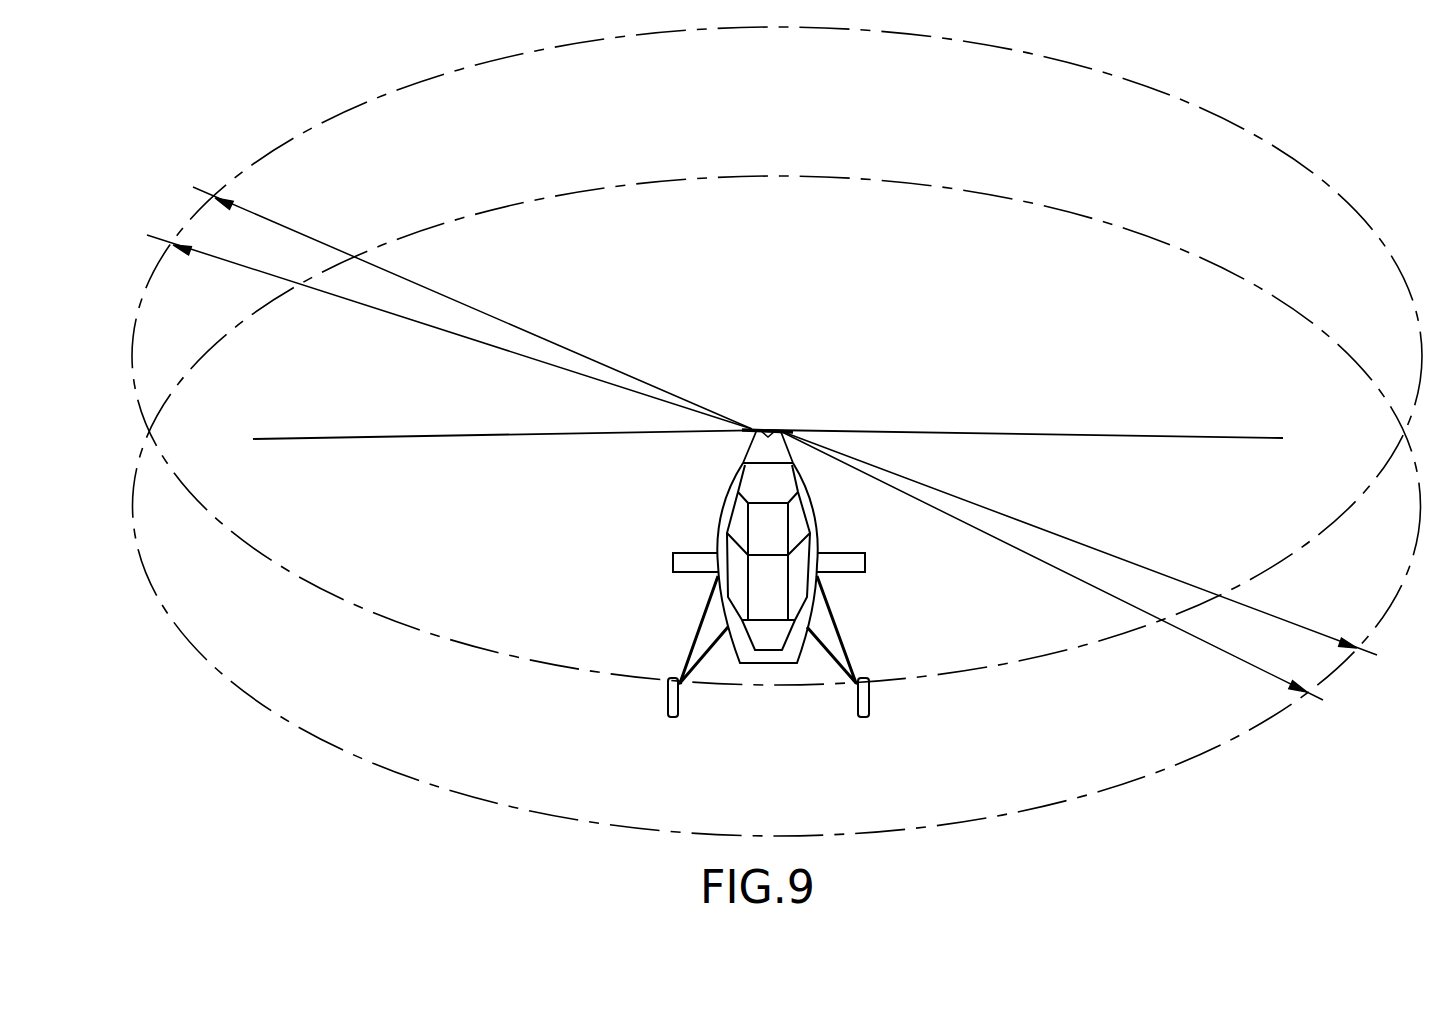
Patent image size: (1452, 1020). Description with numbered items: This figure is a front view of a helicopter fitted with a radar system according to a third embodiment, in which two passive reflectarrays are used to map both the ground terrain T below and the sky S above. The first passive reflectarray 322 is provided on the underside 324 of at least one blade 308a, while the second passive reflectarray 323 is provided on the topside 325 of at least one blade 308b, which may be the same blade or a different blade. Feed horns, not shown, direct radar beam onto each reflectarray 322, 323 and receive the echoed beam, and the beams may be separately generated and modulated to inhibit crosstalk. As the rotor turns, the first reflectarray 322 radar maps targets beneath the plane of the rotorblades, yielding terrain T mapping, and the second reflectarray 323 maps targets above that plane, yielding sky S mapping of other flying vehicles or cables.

The sky S is at (1106, 84).
The ground terrain T is at (565, 810).
The blade 308a is at (906, 431).
The blade 308b is at (461, 437).
The first passive reflectarray 322 is at (800, 452).
The second passive reflectarray 323 is at (755, 428).
The underside 324 is at (940, 448).
The topside 325 is at (607, 420).